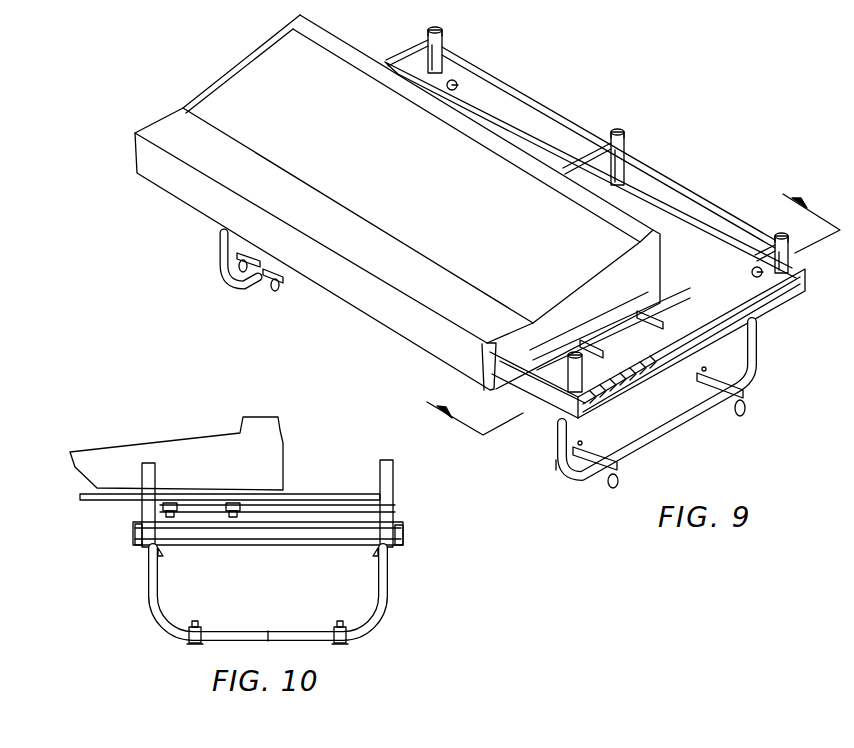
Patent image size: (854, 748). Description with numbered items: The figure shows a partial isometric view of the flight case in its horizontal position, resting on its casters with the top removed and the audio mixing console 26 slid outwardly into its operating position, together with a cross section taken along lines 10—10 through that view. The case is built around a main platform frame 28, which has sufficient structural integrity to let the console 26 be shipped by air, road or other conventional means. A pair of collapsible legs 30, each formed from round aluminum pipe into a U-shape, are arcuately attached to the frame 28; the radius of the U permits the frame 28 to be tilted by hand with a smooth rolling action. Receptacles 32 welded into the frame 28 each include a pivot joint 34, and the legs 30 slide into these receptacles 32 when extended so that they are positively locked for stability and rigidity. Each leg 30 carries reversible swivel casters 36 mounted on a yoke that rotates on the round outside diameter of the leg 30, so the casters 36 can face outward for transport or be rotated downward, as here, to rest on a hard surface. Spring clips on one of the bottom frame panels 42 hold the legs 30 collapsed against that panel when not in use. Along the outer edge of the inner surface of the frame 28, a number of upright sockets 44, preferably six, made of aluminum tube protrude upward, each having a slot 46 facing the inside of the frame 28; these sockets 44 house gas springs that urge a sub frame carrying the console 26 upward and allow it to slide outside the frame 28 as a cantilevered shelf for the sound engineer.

In FIG. 9, the patient support apparatus (section view indicator) 10 is at (618, 306).
In FIG. 9, the audio mixing console 26 is at (207, 80).
In FIG. 10, the audio mixing console 26 is at (175, 440).
In FIG. 9, the main platform frame 28 is at (548, 107).
In FIG. 9, the collapsible legs 30 is at (688, 420).
In FIG. 10, the collapsible legs 30 is at (155, 625).
In FIG. 9, the receptacles 32 is at (458, 84).
In FIG. 10, the pivot joint 34 is at (150, 563).
In FIG. 9, the reversible swivel casters 36 is at (746, 402).
In FIG. 10, the reversible swivel casters 36 is at (188, 645).
In FIG. 9, the bottom frame panel 42 is at (557, 463).
In FIG. 9, the upright sockets 44 is at (627, 160).
In FIG. 10, the upright sockets 44 is at (140, 500).
In FIG. 9, the slot 46 is at (428, 40).